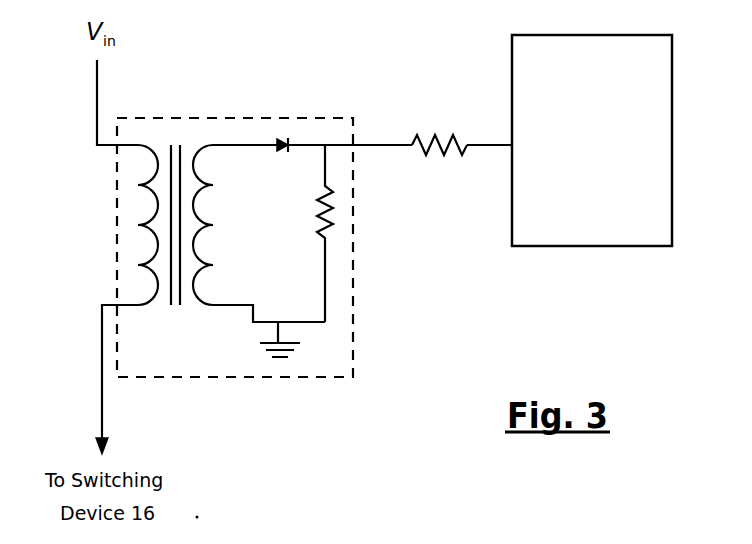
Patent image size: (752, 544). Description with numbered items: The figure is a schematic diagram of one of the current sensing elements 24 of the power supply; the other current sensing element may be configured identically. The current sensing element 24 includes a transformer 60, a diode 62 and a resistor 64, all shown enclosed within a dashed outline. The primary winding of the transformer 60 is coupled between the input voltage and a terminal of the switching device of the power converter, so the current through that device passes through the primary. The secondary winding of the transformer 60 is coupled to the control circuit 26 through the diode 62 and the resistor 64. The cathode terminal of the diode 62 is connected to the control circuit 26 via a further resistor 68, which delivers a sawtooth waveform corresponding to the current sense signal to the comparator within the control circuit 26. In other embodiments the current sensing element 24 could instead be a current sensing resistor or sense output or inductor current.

The current sensing element 24 is at (245, 112).
The control circuit 26 is at (585, 32).
The transformer 60 is at (175, 325).
The diode 62 is at (278, 155).
The resistor 64 is at (305, 242).
The resistor 68 is at (445, 165).